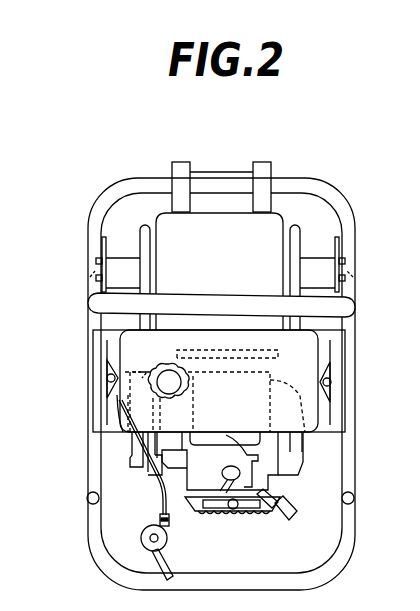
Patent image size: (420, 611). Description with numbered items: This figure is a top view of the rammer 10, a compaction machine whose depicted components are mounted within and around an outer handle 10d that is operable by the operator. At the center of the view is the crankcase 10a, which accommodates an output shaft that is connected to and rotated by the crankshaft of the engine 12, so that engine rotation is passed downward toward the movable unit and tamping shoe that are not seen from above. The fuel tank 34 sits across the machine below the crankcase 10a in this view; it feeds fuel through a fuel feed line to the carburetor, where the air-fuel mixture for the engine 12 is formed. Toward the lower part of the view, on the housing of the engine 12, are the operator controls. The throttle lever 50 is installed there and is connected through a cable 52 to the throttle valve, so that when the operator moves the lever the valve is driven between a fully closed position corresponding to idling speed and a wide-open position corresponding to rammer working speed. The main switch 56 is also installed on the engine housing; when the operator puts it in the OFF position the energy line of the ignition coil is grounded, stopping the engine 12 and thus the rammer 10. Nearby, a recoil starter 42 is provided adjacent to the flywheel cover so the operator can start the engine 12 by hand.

The rammer 10 is at (84, 198).
The handle 10d is at (88, 240).
The crankcase 10a is at (240, 262).
The fuel tank 34 is at (164, 361).
The engine 12 is at (286, 471).
The main switch 56 is at (230, 478).
The recoil starter 42 is at (276, 522).
The cable 52 is at (155, 478).
The throttle lever 50 is at (165, 548).